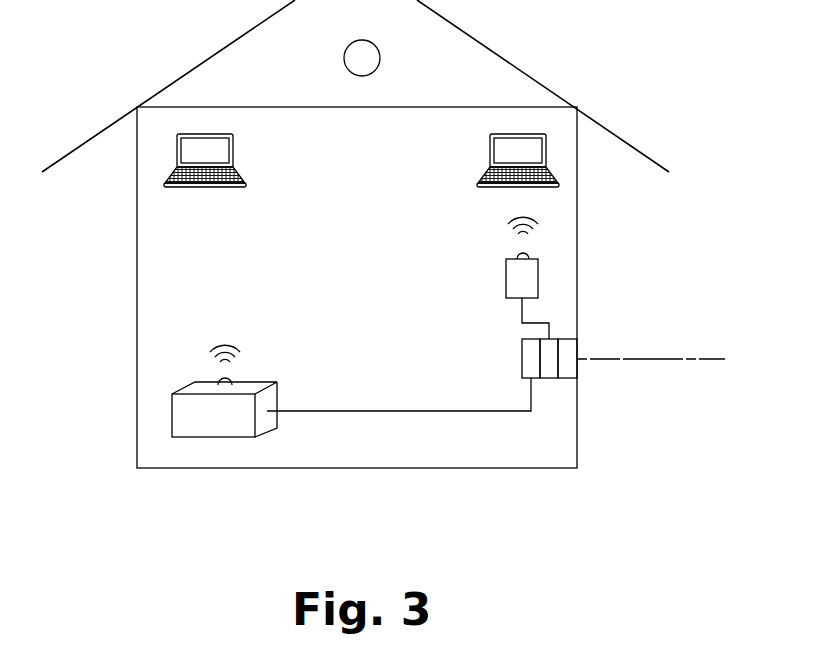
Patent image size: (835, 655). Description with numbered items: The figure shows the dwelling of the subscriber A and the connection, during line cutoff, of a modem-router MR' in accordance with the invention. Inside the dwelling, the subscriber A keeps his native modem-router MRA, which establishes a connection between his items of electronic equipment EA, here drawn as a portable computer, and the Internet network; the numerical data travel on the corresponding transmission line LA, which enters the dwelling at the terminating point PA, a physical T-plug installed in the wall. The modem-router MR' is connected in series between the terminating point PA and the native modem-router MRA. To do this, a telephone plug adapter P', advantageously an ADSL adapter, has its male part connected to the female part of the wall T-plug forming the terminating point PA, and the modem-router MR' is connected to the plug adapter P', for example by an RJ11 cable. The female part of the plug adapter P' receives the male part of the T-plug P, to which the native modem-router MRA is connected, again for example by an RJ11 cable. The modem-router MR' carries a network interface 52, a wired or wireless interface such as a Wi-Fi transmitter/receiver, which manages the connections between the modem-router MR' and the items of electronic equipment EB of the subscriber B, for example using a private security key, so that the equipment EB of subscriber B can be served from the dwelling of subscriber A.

The subscriber A is at (362, 58).
The items of electronic equipment EA is at (233, 154).
The items of electronic equipment EB is at (545, 187).
The network interface 52 is at (528, 254).
The modem-router MR' is at (570, 280).
The T-plug P is at (502, 356).
The telephone plug adapter P' is at (577, 371).
The terminating point PA is at (568, 352).
The transmission line LA is at (625, 360).
The native modem-router MRA is at (214, 430).